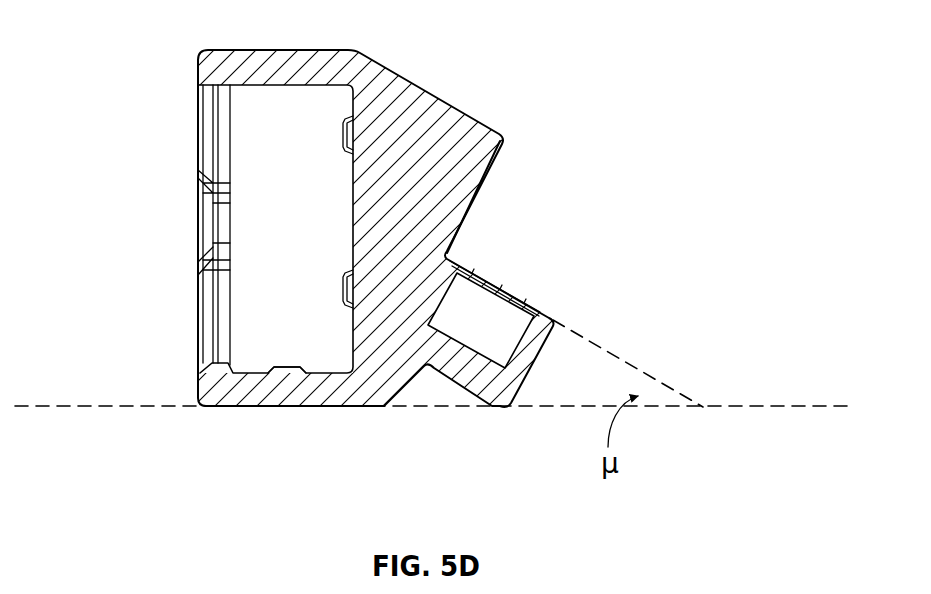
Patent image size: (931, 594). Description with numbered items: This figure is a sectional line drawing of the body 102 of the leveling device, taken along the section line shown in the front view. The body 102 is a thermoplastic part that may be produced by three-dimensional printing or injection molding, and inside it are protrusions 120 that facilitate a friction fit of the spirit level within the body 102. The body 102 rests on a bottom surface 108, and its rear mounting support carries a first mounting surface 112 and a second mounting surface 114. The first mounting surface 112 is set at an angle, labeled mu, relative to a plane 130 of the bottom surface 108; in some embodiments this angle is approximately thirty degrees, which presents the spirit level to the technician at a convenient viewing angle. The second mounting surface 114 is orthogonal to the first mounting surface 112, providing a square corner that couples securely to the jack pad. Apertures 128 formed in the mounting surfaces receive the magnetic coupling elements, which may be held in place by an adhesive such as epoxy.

The body 102 is at (460, 88).
The bottom surface 108 is at (277, 407).
The first mounting surface 112 is at (618, 356).
The second mounting surface 114 is at (495, 167).
The protrusions 120 is at (343, 131).
The apertures 128 is at (510, 280).
The plane 130 is at (647, 408).